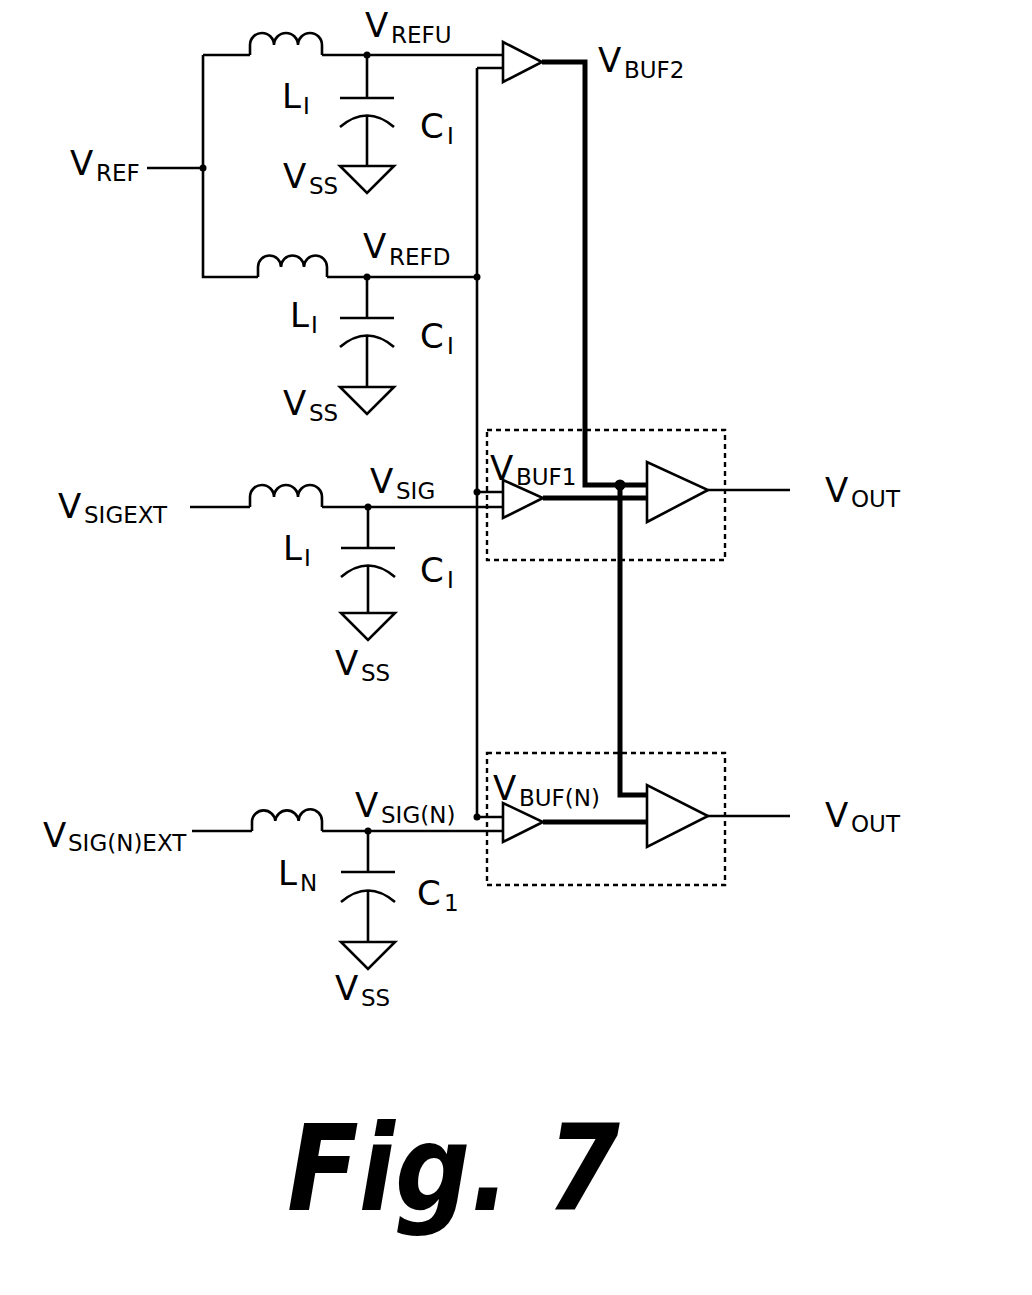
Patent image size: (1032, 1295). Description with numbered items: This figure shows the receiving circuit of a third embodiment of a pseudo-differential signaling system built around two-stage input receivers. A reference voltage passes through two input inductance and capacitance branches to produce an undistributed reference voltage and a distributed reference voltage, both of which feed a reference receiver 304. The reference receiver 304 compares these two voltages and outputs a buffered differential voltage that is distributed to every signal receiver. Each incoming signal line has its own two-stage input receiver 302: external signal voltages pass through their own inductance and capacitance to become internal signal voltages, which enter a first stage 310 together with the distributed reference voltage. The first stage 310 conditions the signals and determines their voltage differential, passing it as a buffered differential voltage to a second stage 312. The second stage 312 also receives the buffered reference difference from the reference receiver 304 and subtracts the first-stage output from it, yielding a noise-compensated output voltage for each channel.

The reference receiver 304 is at (521, 47).
The two-stage input receiver 302 is at (643, 440).
The first stage 310 is at (524, 500).
The second stage 312 is at (678, 490).